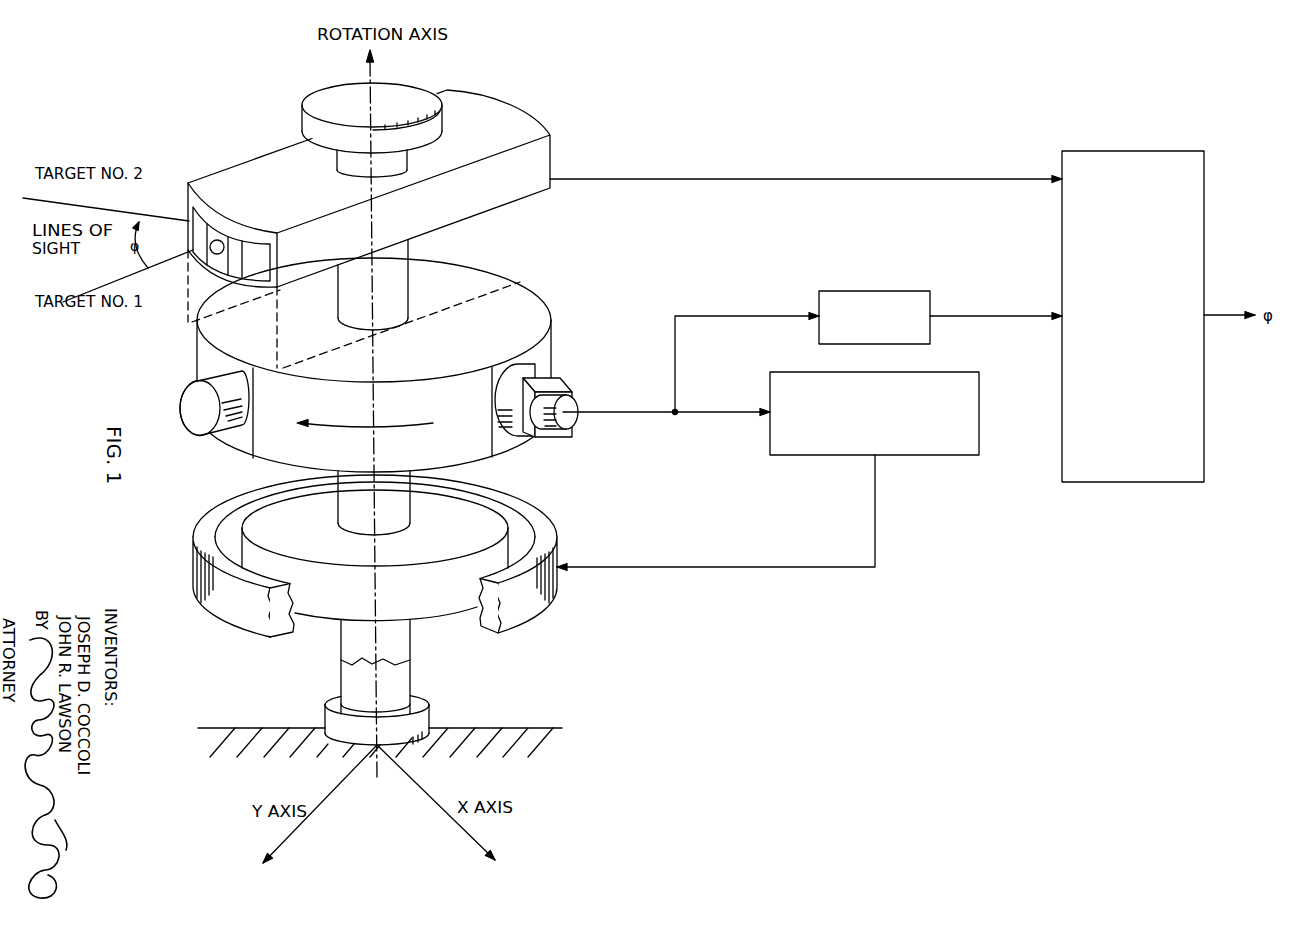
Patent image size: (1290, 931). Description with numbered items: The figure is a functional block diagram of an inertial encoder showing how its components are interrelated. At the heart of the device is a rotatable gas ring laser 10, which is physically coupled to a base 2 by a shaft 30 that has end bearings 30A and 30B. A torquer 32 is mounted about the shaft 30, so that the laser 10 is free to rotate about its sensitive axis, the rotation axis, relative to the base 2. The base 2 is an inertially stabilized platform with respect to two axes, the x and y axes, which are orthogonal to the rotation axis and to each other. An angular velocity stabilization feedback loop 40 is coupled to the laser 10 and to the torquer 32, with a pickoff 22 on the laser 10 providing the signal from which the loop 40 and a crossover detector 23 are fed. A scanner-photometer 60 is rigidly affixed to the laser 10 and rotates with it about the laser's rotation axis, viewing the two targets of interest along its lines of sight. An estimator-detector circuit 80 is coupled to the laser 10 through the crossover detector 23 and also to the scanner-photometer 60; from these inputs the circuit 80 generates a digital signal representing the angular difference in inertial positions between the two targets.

The base 2 is at (409, 747).
The rotatable gas ring laser 10 is at (463, 412).
The angular velocity pickoff 22 is at (575, 432).
The crossover detector 23 is at (865, 340).
The shaft 30 is at (410, 657).
The end bearing 30A is at (372, 130).
The end bearing 30B is at (325, 717).
The torquer 32 is at (444, 600).
The angular velocity stabilization feedback loop 40 is at (888, 440).
The scanner-photometer 60 is at (470, 203).
The estimator-detector circuit 80 is at (1123, 361).